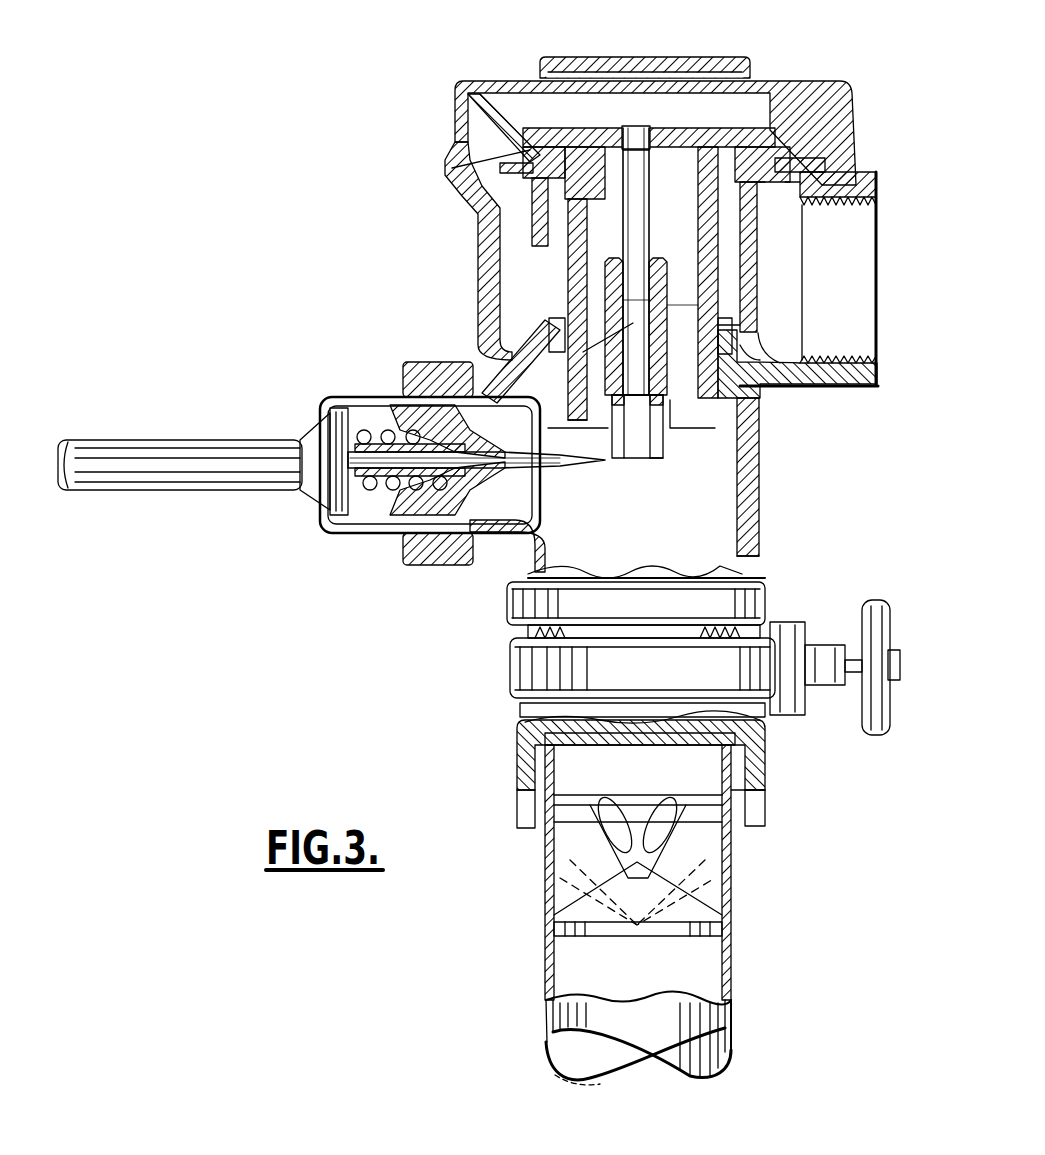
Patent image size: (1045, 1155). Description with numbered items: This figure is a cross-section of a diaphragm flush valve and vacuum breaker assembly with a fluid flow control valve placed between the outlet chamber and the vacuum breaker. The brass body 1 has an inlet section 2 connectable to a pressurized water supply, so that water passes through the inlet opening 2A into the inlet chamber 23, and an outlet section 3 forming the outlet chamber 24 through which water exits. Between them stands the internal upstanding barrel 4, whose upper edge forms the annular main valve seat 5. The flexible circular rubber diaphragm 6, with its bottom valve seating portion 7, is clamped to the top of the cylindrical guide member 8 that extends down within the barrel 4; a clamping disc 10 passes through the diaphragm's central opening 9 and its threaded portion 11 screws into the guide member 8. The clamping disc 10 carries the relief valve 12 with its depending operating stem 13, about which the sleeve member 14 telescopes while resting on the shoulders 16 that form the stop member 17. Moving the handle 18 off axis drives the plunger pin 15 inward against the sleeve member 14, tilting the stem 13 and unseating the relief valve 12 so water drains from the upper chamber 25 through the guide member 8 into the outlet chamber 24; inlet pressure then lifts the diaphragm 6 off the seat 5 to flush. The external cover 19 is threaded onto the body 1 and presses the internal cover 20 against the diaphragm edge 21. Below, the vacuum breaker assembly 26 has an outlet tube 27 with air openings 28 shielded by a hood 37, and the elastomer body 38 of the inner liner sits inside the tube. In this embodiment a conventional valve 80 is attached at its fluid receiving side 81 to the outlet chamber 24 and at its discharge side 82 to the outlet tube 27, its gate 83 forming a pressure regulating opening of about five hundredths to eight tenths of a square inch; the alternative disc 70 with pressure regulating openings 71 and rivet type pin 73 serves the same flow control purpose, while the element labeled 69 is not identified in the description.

The body 1 is at (772, 505).
The inlet section 2 is at (788, 175).
The inlet opening 2A is at (878, 274).
The outlet section 3 is at (762, 548).
The internal upstanding barrel 4 is at (765, 325).
The annular main valve seat 5 is at (772, 178).
The flexible circular rubber diaphragm 6 is at (790, 180).
The bottom valve seating portion 7 is at (735, 258).
The cylindrical guide member 8 is at (665, 398).
The central opening 9 is at (670, 130).
The clamping disc 10 is at (535, 140).
The threaded portion 11 is at (590, 205).
The relief valve 12 is at (604, 118).
The operating stem 13 is at (568, 377).
The sleeve member 14 is at (668, 343).
The plunger pin 15 is at (560, 438).
The shoulders 16 is at (672, 430).
The stop member 17 is at (636, 460).
The handle 18 is at (205, 430).
The external cover 19 is at (455, 120).
The internal cover 20 is at (622, 58).
The edge 21 is at (452, 165).
The inlet chamber 23 is at (862, 307).
The outlet chamber 24 is at (660, 552).
The upper chamber 25 is at (620, 125).
The vacuum breaker assembly 26 is at (515, 889).
The outlet tube 27 is at (535, 1008).
The air openings 28 is at (535, 825).
The hood 37 is at (768, 822).
The body 38 is at (742, 810).
The nozzle 69 is at (646, 264).
The first disc 70 is at (730, 290).
The pressure regulating openings 71 is at (735, 305).
The rivet type pin 73 is at (660, 470).
The valve 80 is at (500, 663).
The fluid receiving side 81 is at (495, 586).
The discharge side 82 is at (508, 710).
The gate 83 is at (828, 646).